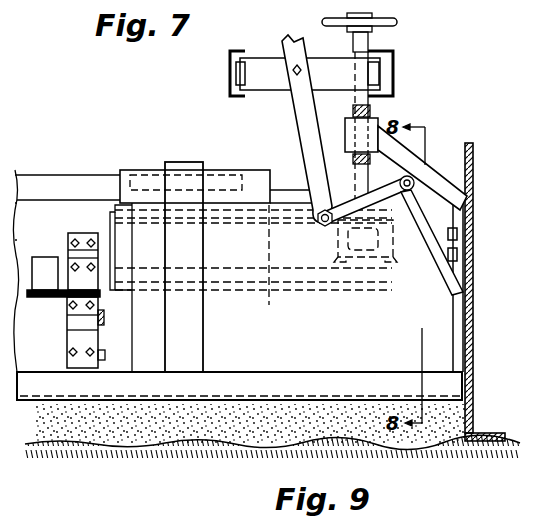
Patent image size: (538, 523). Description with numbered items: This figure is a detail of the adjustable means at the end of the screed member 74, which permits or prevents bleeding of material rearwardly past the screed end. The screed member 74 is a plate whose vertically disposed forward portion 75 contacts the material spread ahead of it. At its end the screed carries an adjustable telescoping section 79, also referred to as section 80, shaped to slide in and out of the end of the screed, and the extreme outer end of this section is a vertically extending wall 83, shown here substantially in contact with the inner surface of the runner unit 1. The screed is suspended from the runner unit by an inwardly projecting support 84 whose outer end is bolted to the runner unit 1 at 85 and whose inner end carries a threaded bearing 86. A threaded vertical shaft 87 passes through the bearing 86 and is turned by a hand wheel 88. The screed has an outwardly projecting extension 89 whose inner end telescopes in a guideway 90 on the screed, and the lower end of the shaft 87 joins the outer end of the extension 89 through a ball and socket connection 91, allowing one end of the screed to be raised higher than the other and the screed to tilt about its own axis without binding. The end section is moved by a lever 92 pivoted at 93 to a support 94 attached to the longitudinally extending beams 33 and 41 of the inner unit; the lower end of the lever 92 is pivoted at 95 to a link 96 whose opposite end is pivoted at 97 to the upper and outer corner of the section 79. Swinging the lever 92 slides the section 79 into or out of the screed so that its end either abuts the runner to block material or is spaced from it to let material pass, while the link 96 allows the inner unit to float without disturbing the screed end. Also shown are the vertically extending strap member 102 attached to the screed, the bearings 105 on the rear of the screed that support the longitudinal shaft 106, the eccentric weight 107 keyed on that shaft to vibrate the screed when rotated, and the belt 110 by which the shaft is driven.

The runner unit 1 is at (474, 409).
The longitudinally extending beam 33 is at (395, 72).
The longitudinally extending beam 41 is at (230, 75).
The screed member 74 is at (99, 175).
The forward portion 75 is at (231, 285).
The adjustable telescoping section 79 is at (283, 176).
The section 80 is at (423, 322).
The vertically extending wall 83 is at (452, 276).
The inwardly projecting support 84 is at (398, 150).
The bolted connection 85 is at (470, 237).
The threaded bearing 86 is at (352, 140).
The threaded vertical shaft 87 is at (372, 109).
The hand wheel 88 is at (398, 22).
The outwardly projecting extension 89 is at (8, 240).
The guideway 90 is at (11, 170).
The ball and socket connection 91 is at (8, 202).
The lever 92 is at (305, 112).
The pivot 93 is at (300, 68).
The support 94 is at (265, 62).
The pivot 95 is at (323, 227).
The link 96 is at (360, 214).
The pivot 97 is at (330, 213).
The vertically extending strap member 102 is at (203, 325).
The bearing 105 is at (85, 237).
The shaft 106 is at (70, 314).
The weight 107 is at (42, 266).
The belt 110 is at (0, 504).